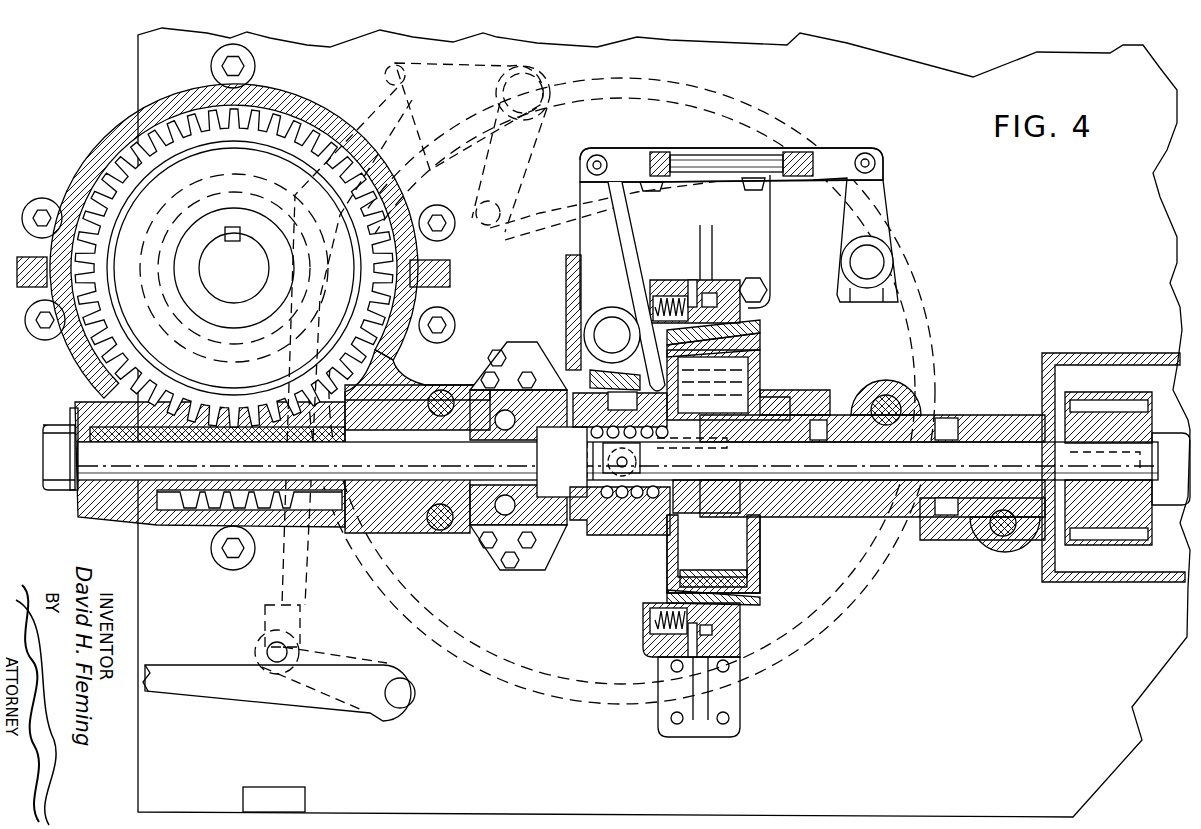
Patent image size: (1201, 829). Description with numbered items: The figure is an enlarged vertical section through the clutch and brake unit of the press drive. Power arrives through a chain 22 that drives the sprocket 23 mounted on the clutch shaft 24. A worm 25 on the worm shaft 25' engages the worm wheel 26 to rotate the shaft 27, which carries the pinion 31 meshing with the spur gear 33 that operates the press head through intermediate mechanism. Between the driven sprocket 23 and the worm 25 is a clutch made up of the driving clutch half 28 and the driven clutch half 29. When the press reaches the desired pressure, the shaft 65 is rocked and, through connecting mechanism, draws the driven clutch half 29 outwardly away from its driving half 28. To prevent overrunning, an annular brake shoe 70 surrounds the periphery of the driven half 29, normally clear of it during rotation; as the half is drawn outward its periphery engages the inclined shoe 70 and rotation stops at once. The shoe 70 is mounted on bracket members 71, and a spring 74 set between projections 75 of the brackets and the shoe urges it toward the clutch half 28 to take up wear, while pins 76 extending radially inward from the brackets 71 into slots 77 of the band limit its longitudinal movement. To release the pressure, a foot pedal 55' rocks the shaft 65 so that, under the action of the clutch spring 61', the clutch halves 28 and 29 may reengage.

The chain 22 is at (1090, 396).
The sprocket 23 is at (1110, 528).
The clutch shaft 24 is at (945, 466).
The worm 25 is at (280, 477).
The worm shaft 25' is at (600, 457).
The worm wheel 26 is at (103, 335).
The shaft 27 is at (218, 283).
The driving clutch half 28 is at (758, 568).
The driven clutch half 29 is at (665, 560).
The pinion 31 is at (234, 180).
The spur gear 33 is at (690, 95).
The foot pedal 55' is at (279, 673).
The spring 61' is at (655, 461).
The shaft 65 is at (888, 258).
The brake shoe 70 is at (742, 620).
The bracket members 71 is at (770, 250).
The spring 74 is at (661, 292).
The projections 75 is at (648, 305).
The pins 76 is at (692, 290).
The slots 77 is at (710, 296).